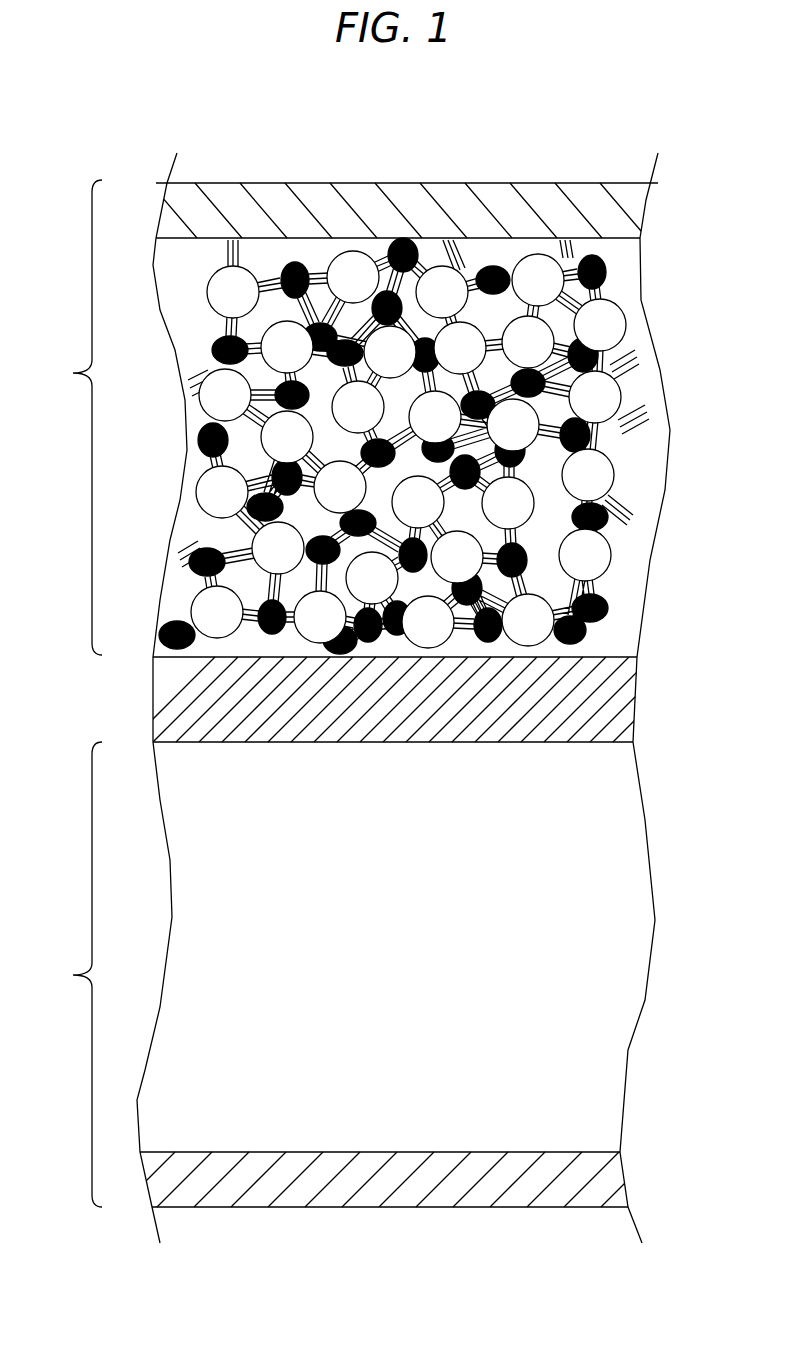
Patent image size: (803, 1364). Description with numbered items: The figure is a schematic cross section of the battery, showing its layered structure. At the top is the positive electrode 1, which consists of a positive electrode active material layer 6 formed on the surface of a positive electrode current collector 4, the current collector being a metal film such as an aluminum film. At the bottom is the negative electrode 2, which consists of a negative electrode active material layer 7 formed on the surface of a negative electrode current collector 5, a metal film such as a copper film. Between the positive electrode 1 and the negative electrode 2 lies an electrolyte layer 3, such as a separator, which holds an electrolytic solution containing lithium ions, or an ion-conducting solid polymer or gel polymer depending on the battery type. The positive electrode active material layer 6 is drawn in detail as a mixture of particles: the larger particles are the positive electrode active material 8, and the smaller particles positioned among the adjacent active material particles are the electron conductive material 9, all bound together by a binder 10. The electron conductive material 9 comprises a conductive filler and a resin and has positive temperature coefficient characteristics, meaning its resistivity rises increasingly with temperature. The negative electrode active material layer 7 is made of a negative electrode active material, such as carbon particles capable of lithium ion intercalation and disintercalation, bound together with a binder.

The positive electrode 1 is at (66, 387).
The negative electrode 2 is at (66, 989).
The electrolyte layer 3 is at (167, 686).
The positive electrode current collector 4 is at (616, 205).
The negative electrode current collector 5 is at (615, 1185).
The positive electrode active material layer 6 is at (445, 446).
The negative electrode active material layer 7 is at (628, 902).
The positive electrode active material 8 is at (622, 325).
The electron conductive material 9 is at (597, 520).
The binder 10 is at (625, 258).